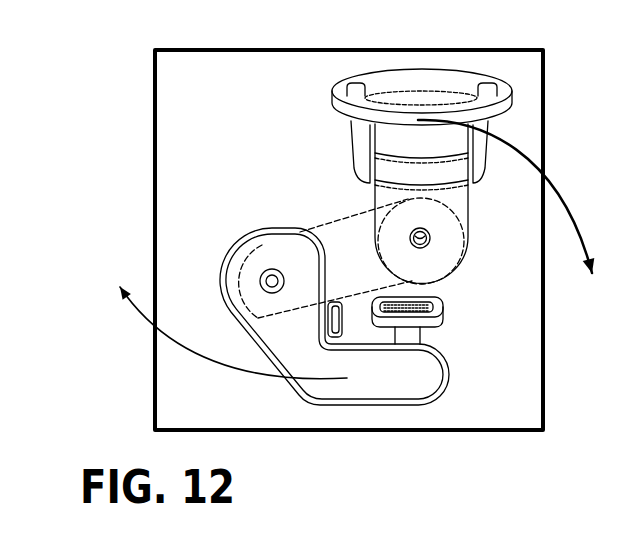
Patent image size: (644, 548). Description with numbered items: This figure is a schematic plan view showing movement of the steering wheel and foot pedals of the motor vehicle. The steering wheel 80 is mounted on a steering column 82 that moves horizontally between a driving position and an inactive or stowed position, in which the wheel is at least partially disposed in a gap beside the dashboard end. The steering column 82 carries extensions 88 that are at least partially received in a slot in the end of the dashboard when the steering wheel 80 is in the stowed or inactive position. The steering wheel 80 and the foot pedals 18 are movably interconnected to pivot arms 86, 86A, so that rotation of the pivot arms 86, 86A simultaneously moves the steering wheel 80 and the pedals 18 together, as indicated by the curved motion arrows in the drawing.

The pedals 18 is at (448, 328).
The steering wheel 80 is at (333, 92).
The steering column 82 is at (467, 203).
The pivot arm 86 is at (318, 222).
The pivot arm 86A is at (420, 387).
The extensions 88 is at (352, 132).